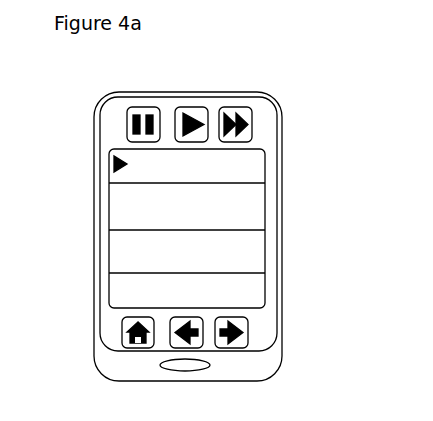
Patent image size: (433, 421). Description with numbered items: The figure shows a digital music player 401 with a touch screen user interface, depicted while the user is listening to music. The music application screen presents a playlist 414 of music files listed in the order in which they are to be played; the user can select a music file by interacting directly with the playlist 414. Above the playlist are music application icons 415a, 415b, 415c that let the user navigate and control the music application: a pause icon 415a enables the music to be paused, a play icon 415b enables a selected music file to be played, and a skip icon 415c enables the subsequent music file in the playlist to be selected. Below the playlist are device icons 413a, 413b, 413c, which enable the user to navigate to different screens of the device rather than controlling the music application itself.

The mobile device 401 is at (338, 120).
The playlist 414 is at (120, 253).
The pause icon 415a is at (128, 108).
The play icon 415b is at (189, 107).
The skip icon 415c is at (234, 107).
The device icon 413a is at (145, 348).
The device icon 413b is at (191, 348).
The device icon 413c is at (240, 337).